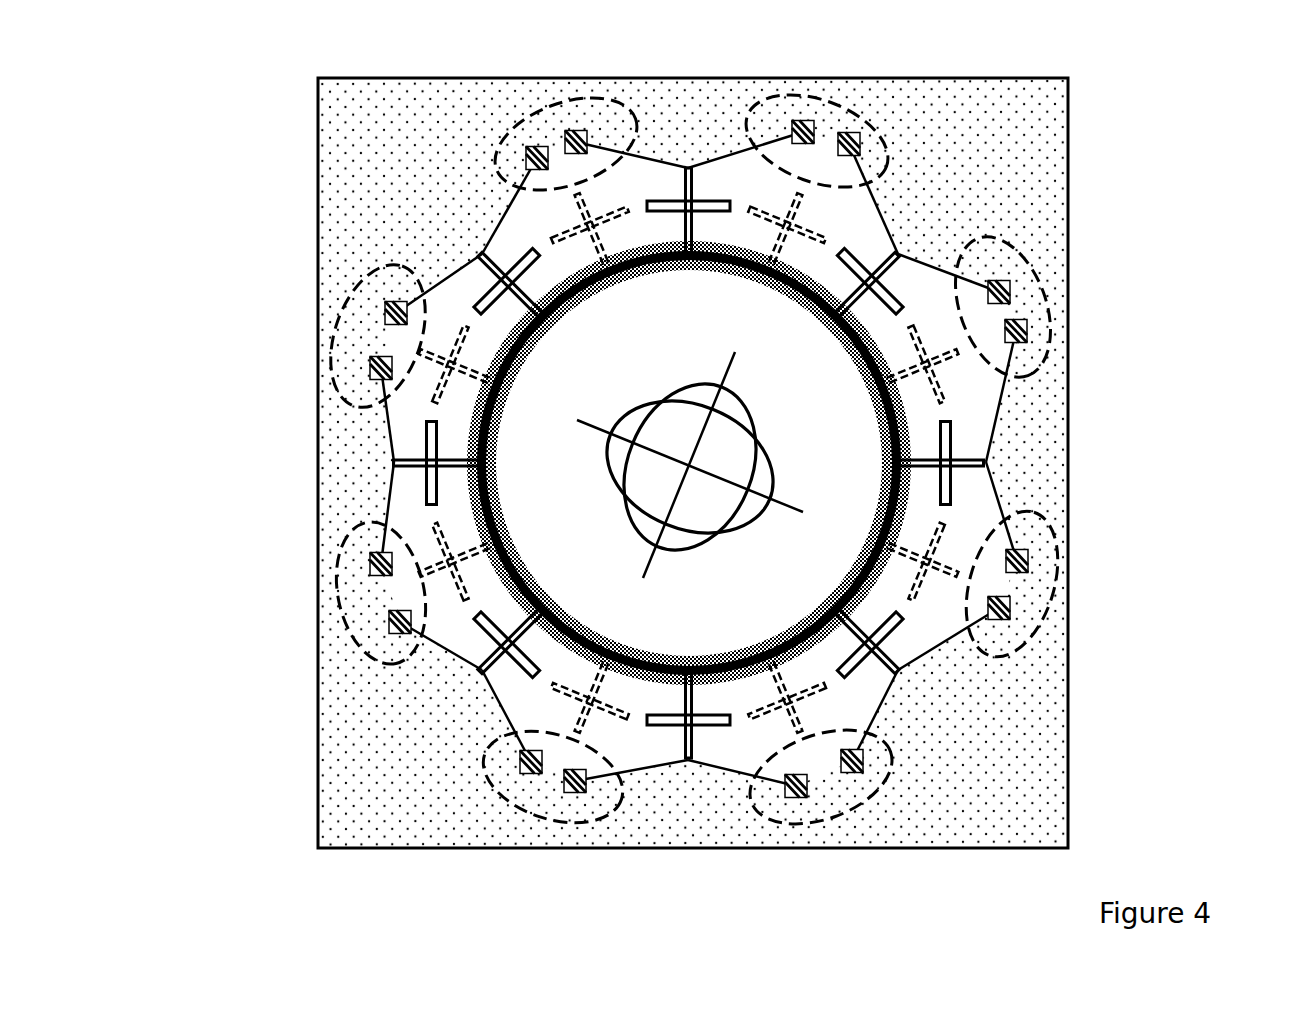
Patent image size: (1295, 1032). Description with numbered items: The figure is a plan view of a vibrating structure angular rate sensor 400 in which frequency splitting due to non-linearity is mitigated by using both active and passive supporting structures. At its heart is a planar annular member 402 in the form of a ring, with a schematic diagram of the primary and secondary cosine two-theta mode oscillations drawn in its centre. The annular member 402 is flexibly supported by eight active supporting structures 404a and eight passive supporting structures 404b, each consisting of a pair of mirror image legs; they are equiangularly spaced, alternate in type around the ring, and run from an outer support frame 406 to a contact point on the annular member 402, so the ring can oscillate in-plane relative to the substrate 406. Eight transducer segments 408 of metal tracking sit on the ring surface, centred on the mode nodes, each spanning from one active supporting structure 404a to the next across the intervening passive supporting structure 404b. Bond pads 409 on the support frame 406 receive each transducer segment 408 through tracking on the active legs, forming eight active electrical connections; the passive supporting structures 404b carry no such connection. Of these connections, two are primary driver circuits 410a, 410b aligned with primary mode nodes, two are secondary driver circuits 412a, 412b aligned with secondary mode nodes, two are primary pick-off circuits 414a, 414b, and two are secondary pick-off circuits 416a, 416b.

The vibrating structure angular rate sensor 400 is at (1165, 100).
The planar annular member 402 is at (828, 641).
The active supporting structures 404a is at (878, 261).
The passive supporting structures 404b is at (559, 221).
The outer support frame 406 is at (362, 711).
The transducer segments 408 is at (905, 500).
The bond pads 409 is at (378, 559).
The primary driver circuit 410a is at (785, 100).
The primary driver circuit 410b is at (563, 812).
The secondary driver circuit 412a is at (1032, 295).
The secondary driver circuit 412b is at (300, 555).
The primary pick-off circuit 414a is at (1042, 605).
The primary pick-off circuit 414b is at (352, 318).
The secondary pick-off circuit 416a is at (823, 802).
The secondary pick-off circuit 416b is at (590, 103).